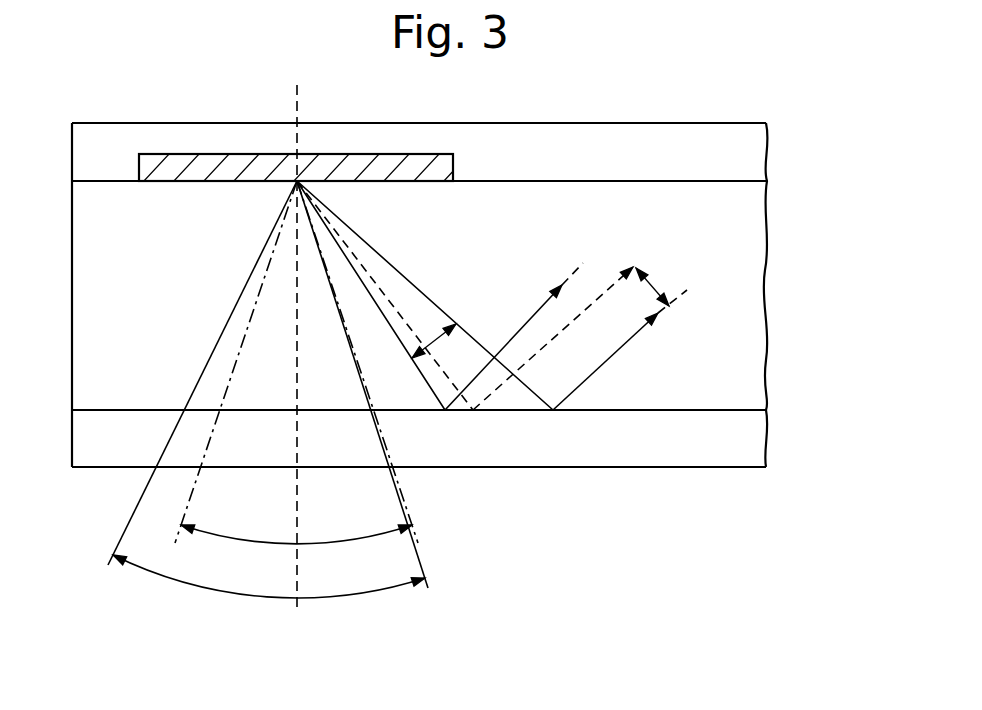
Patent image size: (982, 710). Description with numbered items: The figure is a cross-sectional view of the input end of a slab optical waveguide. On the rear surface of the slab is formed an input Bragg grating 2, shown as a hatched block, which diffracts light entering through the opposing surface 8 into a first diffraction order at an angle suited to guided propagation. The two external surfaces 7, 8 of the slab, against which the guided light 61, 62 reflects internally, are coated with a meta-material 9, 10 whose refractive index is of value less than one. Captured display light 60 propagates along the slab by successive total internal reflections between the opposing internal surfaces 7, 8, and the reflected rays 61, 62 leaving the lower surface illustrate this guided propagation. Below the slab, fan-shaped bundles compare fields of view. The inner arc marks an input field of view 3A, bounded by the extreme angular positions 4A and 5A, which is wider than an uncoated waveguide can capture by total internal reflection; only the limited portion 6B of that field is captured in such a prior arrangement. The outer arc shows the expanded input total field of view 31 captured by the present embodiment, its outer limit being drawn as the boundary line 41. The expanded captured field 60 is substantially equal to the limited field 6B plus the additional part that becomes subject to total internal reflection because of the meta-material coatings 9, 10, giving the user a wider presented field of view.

The input Bragg grating 2 is at (172, 160).
The meta-material coating 9 is at (657, 148).
The internal slab surface 7 is at (711, 181).
The opposing internal slab surface 8 is at (722, 410).
The meta-material coating 10 is at (645, 445).
The captured display light 60 is at (438, 342).
The guided light 61 is at (543, 304).
The guided light 62 is at (632, 341).
The limited total field of view 6B is at (655, 282).
The outer emission boundary ray 41 is at (133, 515).
The extreme angular position of the total field of view 4A is at (194, 488).
The extreme angular position of the total field of view 5A is at (406, 507).
The expanded input total field of view 31 is at (210, 590).
The input field of view 3A is at (360, 540).